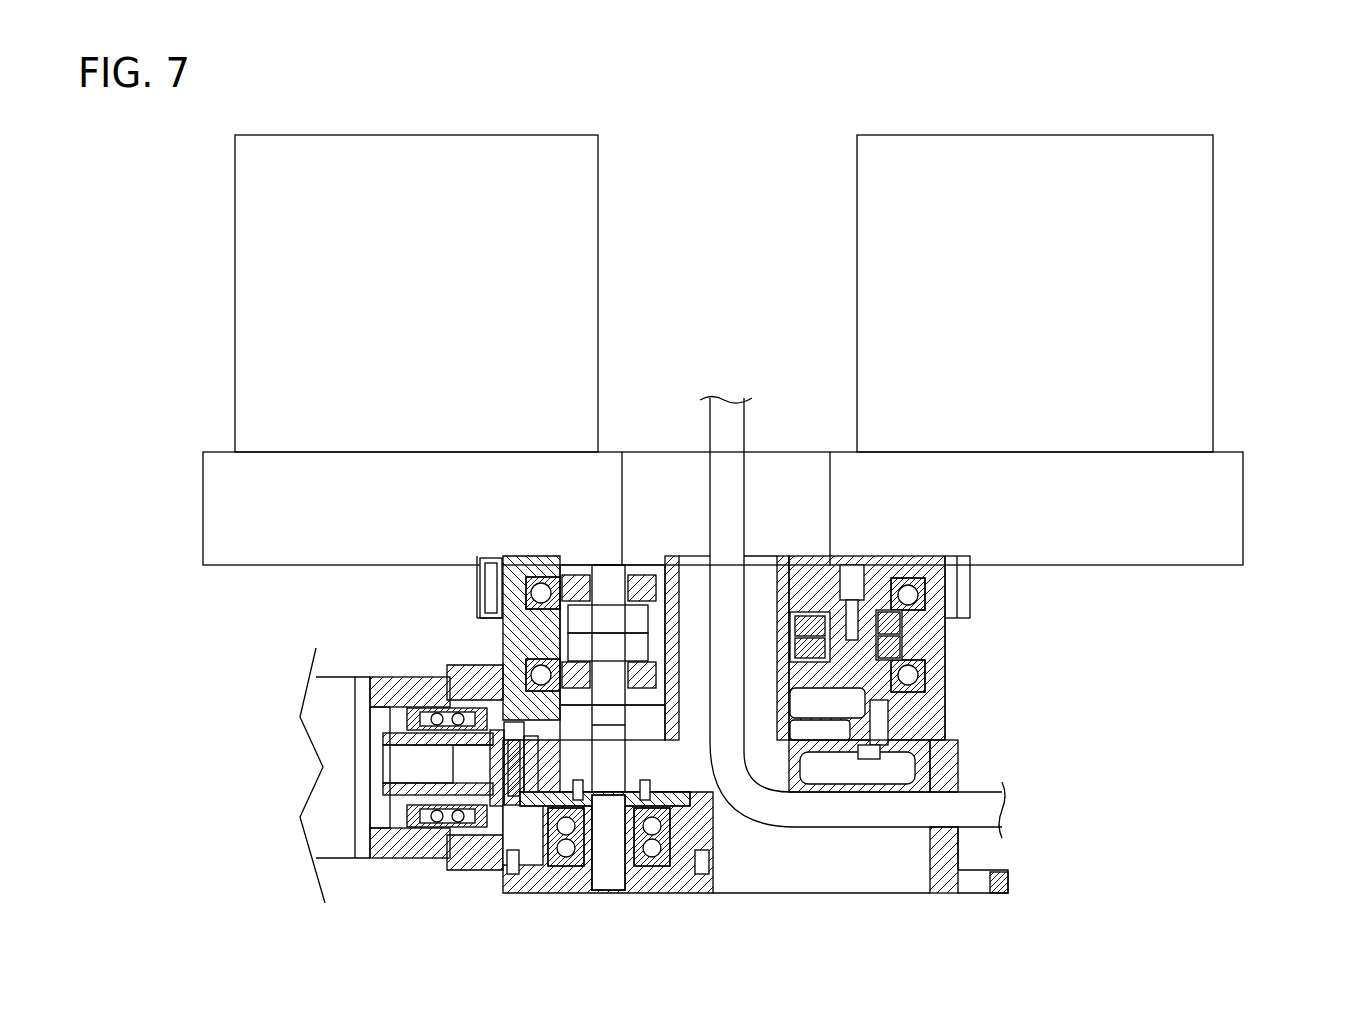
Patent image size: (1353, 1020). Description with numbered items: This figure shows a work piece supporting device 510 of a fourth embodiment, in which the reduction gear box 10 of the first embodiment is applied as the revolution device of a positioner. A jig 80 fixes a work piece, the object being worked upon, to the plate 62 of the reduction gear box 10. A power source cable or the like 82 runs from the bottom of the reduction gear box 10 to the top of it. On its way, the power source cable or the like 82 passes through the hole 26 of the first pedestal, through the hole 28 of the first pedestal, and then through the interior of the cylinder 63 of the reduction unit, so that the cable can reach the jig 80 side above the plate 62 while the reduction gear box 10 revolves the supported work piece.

The work piece supporting device 510 is at (1264, 118).
The jig 80 is at (1180, 313).
The power source cable or the like 82 is at (732, 425).
The cylinder 63 is at (692, 575).
The plate 62 is at (917, 553).
The reduction gear box 10 is at (709, 642).
The hole 28 is at (762, 745).
The hole 26 is at (965, 838).